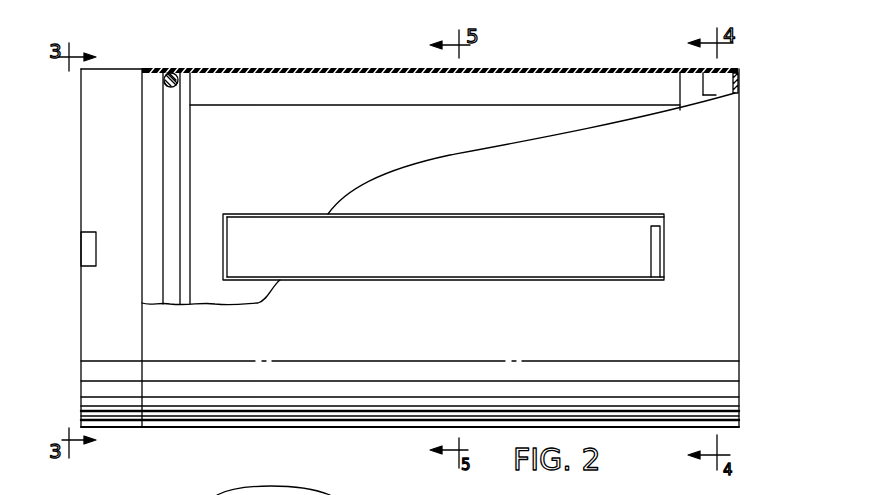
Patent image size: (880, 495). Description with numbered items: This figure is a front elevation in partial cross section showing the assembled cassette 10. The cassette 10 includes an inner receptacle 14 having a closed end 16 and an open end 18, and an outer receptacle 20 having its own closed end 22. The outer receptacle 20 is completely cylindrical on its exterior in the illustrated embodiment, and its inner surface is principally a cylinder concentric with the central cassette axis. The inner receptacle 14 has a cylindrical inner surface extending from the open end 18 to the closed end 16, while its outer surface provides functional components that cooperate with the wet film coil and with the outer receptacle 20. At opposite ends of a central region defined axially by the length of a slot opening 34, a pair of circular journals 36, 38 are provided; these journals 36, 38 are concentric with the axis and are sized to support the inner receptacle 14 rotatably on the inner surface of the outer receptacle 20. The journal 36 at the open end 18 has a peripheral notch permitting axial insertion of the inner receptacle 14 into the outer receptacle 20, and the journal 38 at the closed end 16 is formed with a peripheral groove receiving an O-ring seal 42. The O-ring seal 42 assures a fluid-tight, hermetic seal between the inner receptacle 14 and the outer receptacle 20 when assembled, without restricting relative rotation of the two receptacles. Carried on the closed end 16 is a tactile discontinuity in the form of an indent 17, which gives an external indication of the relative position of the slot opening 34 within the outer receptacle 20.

The cassette 10 is at (551, 66).
The inner receptacle 14 is at (340, 106).
The closed end 16 is at (74, 176).
The indent 17 is at (91, 263).
The open end 18 is at (716, 95).
The outer receptacle 20 is at (465, 325).
The closed end 22 is at (739, 212).
The slot opening 34 is at (224, 238).
The journal 36 is at (687, 100).
The journal 38 is at (211, 248).
The O-ring seal 42 is at (174, 72).